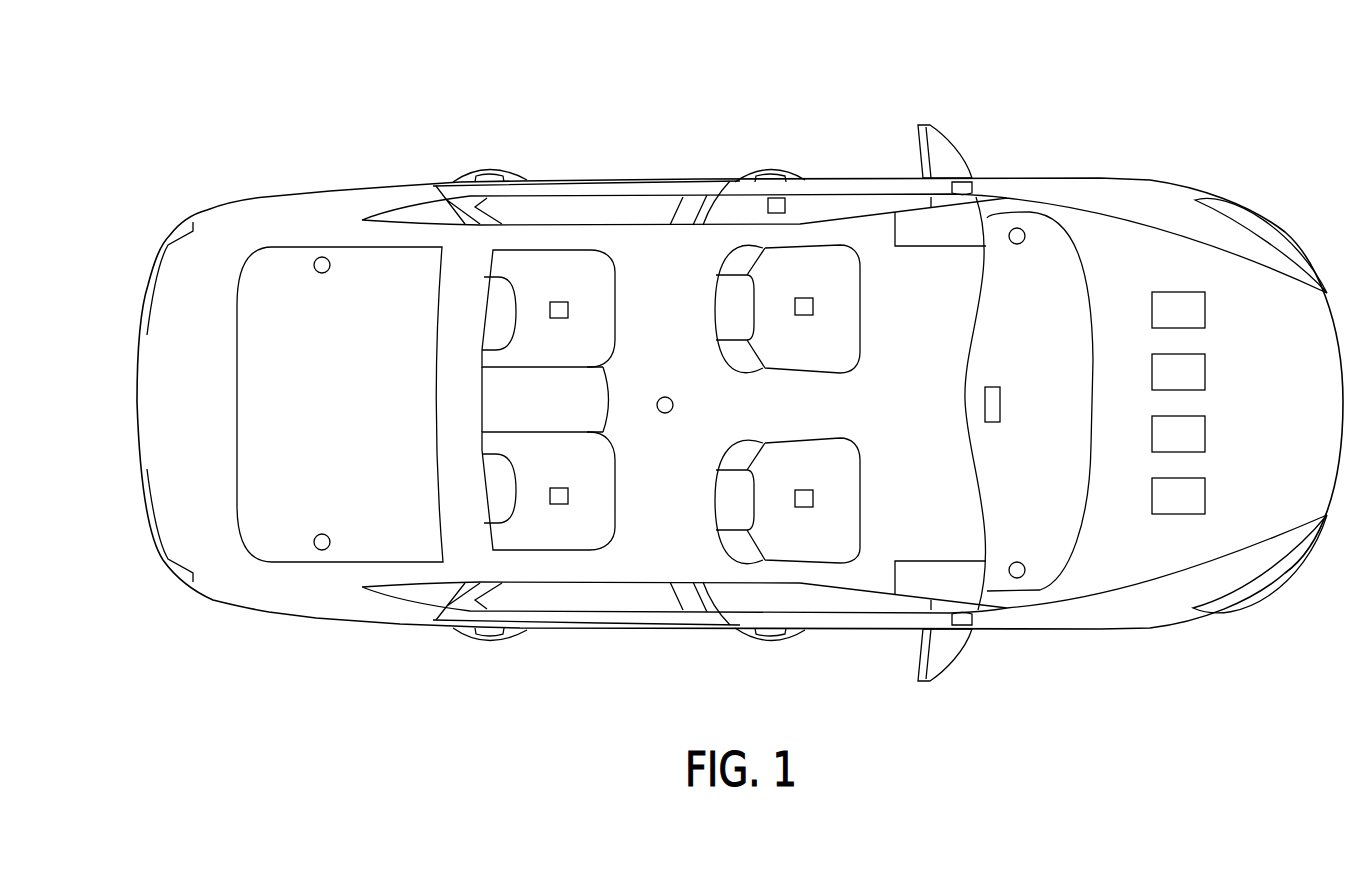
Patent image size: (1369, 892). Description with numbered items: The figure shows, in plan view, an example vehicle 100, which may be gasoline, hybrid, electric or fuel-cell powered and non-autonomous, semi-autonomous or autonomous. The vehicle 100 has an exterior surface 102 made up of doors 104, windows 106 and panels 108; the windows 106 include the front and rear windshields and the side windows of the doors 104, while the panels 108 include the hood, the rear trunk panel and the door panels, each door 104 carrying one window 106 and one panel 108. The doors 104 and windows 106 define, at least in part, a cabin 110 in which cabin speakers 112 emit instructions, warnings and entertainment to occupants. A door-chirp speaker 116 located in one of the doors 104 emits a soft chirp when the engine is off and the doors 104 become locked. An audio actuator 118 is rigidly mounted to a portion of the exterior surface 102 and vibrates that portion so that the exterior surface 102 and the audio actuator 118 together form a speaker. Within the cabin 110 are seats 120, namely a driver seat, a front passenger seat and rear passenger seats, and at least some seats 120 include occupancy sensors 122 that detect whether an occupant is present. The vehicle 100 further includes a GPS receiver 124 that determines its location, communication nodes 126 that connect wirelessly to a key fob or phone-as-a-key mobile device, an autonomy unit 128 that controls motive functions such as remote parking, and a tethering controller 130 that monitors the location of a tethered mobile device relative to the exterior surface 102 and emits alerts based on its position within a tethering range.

The vehicle 100 is at (1272, 124).
The exterior surface 102 is at (1118, 193).
The doors 104 is at (822, 207).
The windows 106 is at (267, 293).
The panels 108 is at (157, 367).
The cabin 110 is at (823, 420).
The cabin speakers 112 is at (928, 248).
The door-chirp speaker 116 is at (768, 197).
The audio actuator 118 is at (1000, 405).
The seats 120 is at (558, 411).
The occupancy sensors 122 is at (559, 301).
The GPS receiver 124 is at (1198, 387).
The communication nodes 126 is at (321, 257).
The autonomy unit 128 is at (1198, 449).
The tethering controller 130 is at (1198, 510).